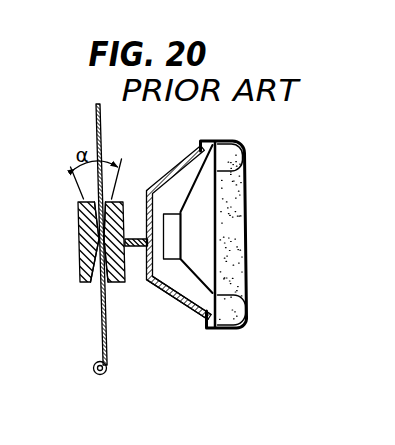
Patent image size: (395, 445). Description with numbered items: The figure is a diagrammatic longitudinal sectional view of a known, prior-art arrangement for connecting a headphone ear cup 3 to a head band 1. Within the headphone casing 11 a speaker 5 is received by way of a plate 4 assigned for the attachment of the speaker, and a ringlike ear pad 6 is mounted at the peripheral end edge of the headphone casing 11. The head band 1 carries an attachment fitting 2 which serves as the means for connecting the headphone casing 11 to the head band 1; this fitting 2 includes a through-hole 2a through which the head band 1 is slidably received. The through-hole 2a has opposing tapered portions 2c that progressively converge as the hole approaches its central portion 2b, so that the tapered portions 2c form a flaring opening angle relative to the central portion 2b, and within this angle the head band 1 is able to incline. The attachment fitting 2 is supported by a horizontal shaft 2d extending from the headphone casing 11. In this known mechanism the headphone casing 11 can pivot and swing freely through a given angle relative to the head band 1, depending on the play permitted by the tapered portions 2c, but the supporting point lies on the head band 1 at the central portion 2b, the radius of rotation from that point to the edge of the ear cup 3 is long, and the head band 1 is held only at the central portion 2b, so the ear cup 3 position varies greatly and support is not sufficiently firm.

The head band 1 is at (103, 342).
The attachment fitting 2 is at (108, 267).
The through-hole 2a is at (111, 283).
The central portion 2b is at (100, 241).
The tapered portions 2c is at (92, 203).
The horizontal shaft 2d is at (141, 249).
The headphone ear cup 3 is at (183, 161).
The plate 4 is at (218, 252).
The speaker 5 is at (175, 228).
The ringlike ear pad 6 is at (241, 319).
The headphone casing 11 is at (185, 303).